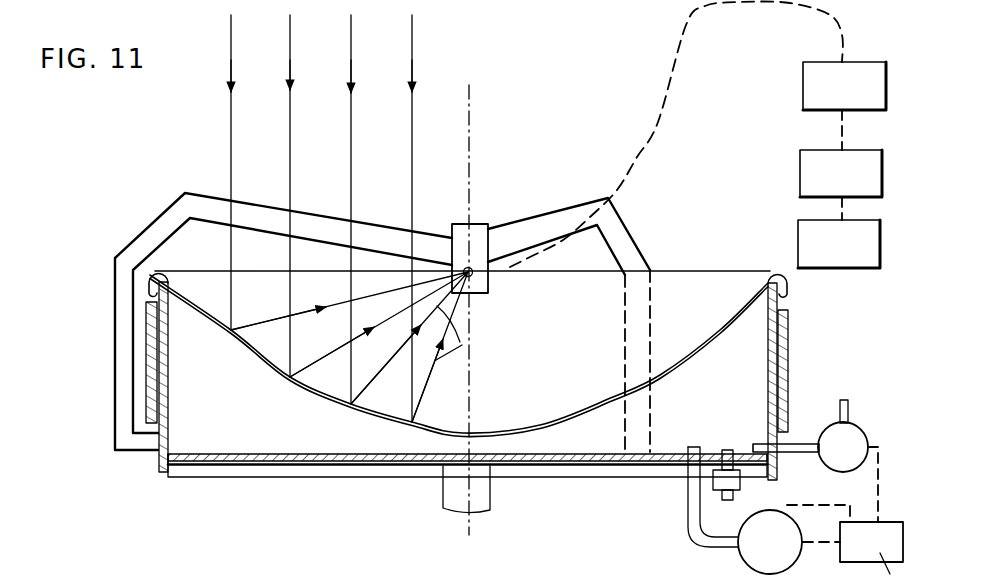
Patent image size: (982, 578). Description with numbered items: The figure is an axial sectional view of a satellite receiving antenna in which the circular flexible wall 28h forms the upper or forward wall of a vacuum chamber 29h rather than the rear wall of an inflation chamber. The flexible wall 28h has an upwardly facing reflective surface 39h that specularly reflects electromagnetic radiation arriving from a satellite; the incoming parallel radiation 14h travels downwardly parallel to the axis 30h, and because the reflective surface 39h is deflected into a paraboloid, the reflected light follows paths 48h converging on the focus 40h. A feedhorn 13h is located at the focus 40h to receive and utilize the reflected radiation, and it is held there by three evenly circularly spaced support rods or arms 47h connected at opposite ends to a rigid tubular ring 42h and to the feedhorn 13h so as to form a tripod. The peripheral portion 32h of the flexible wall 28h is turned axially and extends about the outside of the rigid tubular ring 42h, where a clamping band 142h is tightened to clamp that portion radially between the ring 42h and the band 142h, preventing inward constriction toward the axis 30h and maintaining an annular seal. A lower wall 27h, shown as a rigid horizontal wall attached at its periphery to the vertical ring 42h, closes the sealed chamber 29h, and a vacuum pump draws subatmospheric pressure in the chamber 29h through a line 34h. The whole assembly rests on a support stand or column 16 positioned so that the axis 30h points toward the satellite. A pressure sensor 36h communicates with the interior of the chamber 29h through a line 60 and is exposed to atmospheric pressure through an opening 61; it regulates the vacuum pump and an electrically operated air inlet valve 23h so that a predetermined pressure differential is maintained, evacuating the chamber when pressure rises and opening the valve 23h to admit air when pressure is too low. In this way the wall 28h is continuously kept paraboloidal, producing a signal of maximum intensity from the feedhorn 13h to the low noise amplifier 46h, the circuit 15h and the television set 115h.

The incoming parallel radiation 14h is at (289, 122).
The axis 30h is at (471, 126).
The support rods or arms 47h is at (180, 204).
The reflective surface 39h is at (683, 357).
The low noise amplifier 46h is at (803, 85).
The circuit 15h is at (806, 172).
The television set 115h is at (865, 259).
The feedhorn 13h is at (496, 228).
The focus 40h is at (490, 281).
The reflected light paths 48h is at (462, 344).
The flexible wall 28h is at (612, 396).
The rigid tubular ring 42h is at (167, 350).
The clamping band 142h is at (147, 405).
The peripheral portion 32h is at (791, 337).
The lower wall 27h is at (313, 462).
The vacuum chamber 29h is at (242, 416).
The support stand or column 16 is at (490, 492).
The line 34h is at (688, 507).
The air inlet valve 23h is at (797, 576).
The line 60 is at (797, 454).
The opening 61 is at (840, 416).
The pressure sensor 36h is at (858, 431).